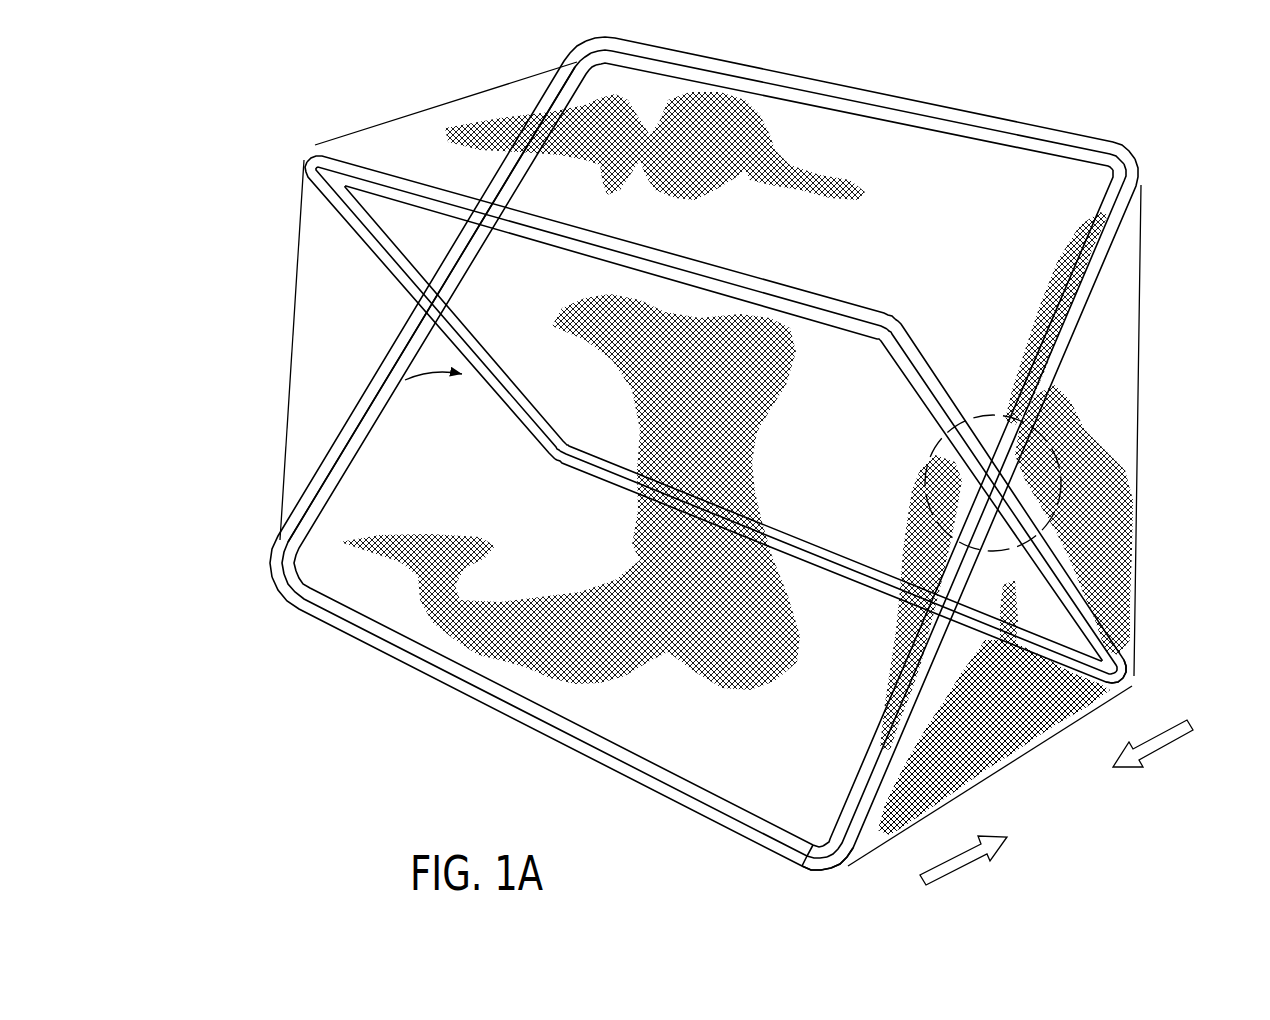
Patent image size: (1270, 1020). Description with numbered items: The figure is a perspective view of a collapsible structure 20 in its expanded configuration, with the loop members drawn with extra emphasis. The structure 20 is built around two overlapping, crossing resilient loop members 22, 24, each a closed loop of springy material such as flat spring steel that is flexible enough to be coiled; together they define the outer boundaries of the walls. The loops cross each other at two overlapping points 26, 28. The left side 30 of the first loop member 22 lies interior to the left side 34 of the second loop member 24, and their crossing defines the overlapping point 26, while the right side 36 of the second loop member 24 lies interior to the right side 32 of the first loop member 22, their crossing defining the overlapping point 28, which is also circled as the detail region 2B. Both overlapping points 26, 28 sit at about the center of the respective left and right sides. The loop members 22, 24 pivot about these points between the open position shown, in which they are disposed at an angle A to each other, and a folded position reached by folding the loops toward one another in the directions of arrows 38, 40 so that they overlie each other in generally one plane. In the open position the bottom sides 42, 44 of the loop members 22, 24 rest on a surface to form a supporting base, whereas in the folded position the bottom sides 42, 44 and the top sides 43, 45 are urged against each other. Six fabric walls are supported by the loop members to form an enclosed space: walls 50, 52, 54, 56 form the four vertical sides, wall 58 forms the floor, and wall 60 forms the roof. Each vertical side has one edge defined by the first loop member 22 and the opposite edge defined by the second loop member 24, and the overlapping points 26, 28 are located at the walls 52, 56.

The structure 20 is at (1122, 120).
The first loop member 22 is at (806, 852).
The second loop member 24 is at (1110, 663).
The overlapping point 26 is at (415, 301).
The overlapping point 28 is at (988, 440).
The detail view region 2B is at (930, 476).
The left side of the first loop member 30 is at (374, 425).
The right side of the first loop member 32 is at (938, 643).
The left side of the second loop member 34 is at (490, 355).
The right side of the second loop member 36 is at (1089, 603).
The arrow 38 is at (965, 868).
The arrow 40 is at (1165, 740).
The bottom side of the first loop member 42 is at (478, 688).
The top side of the first loop member 43 is at (715, 266).
The bottom side of the second loop member 44 is at (605, 482).
The top side of the second loop member 45 is at (779, 74).
The fabric wall 50 is at (674, 738).
The fabric wall 52 is at (1018, 732).
The fabric wall 54 is at (1140, 385).
The fabric wall 56 is at (290, 388).
The fabric wall 58 is at (977, 786).
The fabric wall 60 is at (938, 166).
The angle A is at (433, 398).